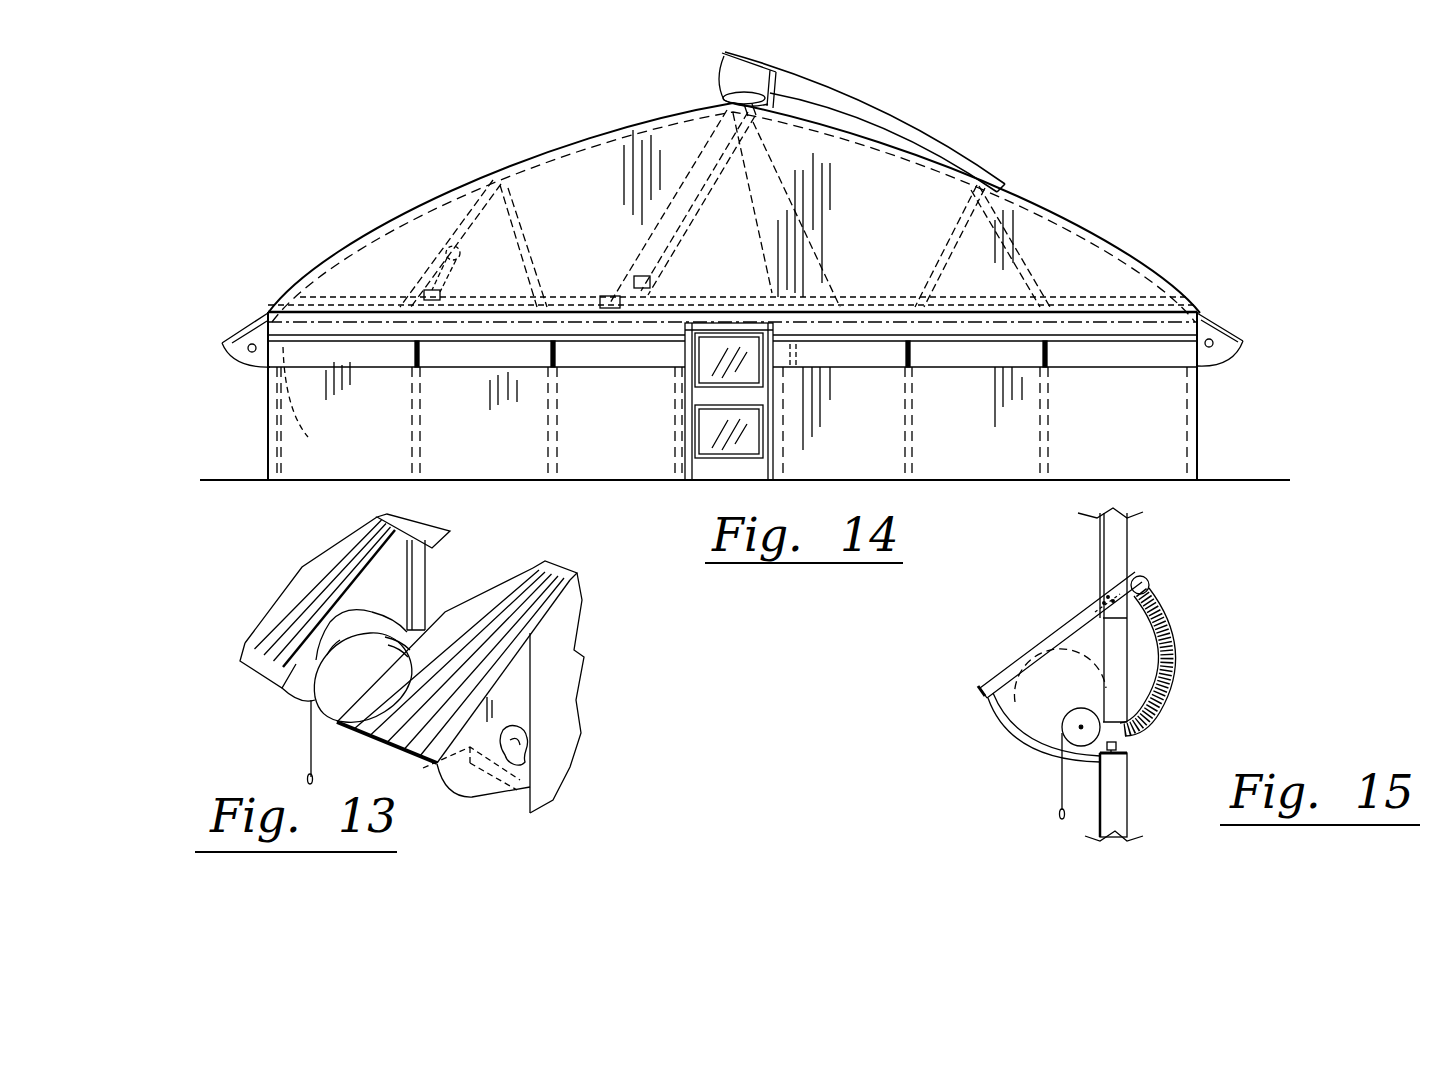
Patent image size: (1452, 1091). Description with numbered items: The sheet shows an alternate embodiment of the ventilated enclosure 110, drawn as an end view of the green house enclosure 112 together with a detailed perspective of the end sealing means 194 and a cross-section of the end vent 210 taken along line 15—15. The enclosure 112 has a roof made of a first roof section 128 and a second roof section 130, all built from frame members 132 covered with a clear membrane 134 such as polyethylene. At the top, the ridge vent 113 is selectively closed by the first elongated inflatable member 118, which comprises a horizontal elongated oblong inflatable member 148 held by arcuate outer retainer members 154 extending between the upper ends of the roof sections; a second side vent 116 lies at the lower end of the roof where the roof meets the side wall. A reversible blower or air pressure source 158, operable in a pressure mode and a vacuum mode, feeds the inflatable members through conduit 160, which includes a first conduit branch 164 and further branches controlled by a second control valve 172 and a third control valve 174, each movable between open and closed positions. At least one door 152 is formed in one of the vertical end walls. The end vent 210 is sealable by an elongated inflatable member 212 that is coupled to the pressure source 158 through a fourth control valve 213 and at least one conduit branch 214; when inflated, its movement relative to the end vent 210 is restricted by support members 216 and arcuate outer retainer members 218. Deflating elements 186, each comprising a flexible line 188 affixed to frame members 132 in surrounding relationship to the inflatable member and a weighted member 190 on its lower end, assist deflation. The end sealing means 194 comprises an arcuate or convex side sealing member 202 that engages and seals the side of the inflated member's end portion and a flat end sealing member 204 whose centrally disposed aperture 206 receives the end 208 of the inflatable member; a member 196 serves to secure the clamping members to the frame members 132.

In FIG. 14, the ventilated enclosure 110 is at (316, 152).
In FIG. 14, the enclosure 112 is at (1195, 290).
In FIG. 14, the ridge vent 113 is at (744, 70).
In FIG. 14, the second side vent 116 is at (263, 315).
In FIG. 14, the first elongated inflatable member 118 is at (715, 71).
In FIG. 14, the first roof section 128 is at (982, 123).
In FIG. 14, the second roof section 130 is at (325, 228).
In FIG. 14, the frame members 132 is at (268, 433).
In FIG. 15, the frame members 132 is at (1125, 790).
In FIG. 14, the clear membrane 134 is at (1070, 250).
In FIG. 15, the clear membrane 134 is at (1098, 570).
In FIG. 14, the horizontal elongated oblong inflatable member 148 is at (775, 88).
In FIG. 14, the door 152 is at (690, 396).
In FIG. 14, the arcuate outer retainer members 154 is at (720, 80).
In FIG. 14, the reversible blower or air pressure source 158 is at (457, 262).
In FIG. 14, the conduit 160 is at (562, 293).
In FIG. 15, the conduit 160 is at (1149, 580).
In FIG. 14, the first conduit branch 164 is at (324, 402).
In FIG. 14, the second control valve 172 is at (660, 320).
In FIG. 14, the third control valve 174 is at (655, 290).
In FIG. 13, the deflating element 186 is at (270, 702).
In FIG. 15, the deflating element 186 is at (950, 790).
In FIG. 13, the flexible line 188 is at (309, 748).
In FIG. 15, the flexible line 188 is at (1060, 793).
In FIG. 13, the weighted member 190 is at (307, 777).
In FIG. 15, the weighted member 190 is at (1058, 818).
In FIG. 13, the end sealing means 194 is at (552, 731).
In FIG. 13, the member 196 is at (427, 562).
In FIG. 13, the arcuate or convex side sealing member 202 is at (537, 578).
In FIG. 14, the flat end sealing member 204 is at (236, 352).
In FIG. 13, the flat end sealing member 204 is at (505, 683).
In FIG. 13, the centrally disposed aperture 206 is at (512, 715).
In FIG. 14, the end of the inflatable members 208 is at (250, 353).
In FIG. 13, the end of the inflatable members 208 is at (520, 757).
In FIG. 14, the end vent 210 is at (438, 355).
In FIG. 15, the end vent 210 is at (1088, 634).
In FIG. 14, the elongated inflatable member 212 is at (455, 362).
In FIG. 15, the elongated inflatable member 212 is at (1033, 722).
In FIG. 14, the fourth control valve 213 is at (800, 355).
In FIG. 14, the conduit branch 214 is at (690, 303).
In FIG. 15, the conduit branch 214 is at (1177, 648).
In FIG. 15, the support members 216 is at (990, 690).
In FIG. 14, the arcuate outer retainer members 218 is at (912, 357).
In FIG. 15, the arcuate outer retainer members 218 is at (1010, 728).
In FIG. 14, the section line 15— 15 is at (872, 282).